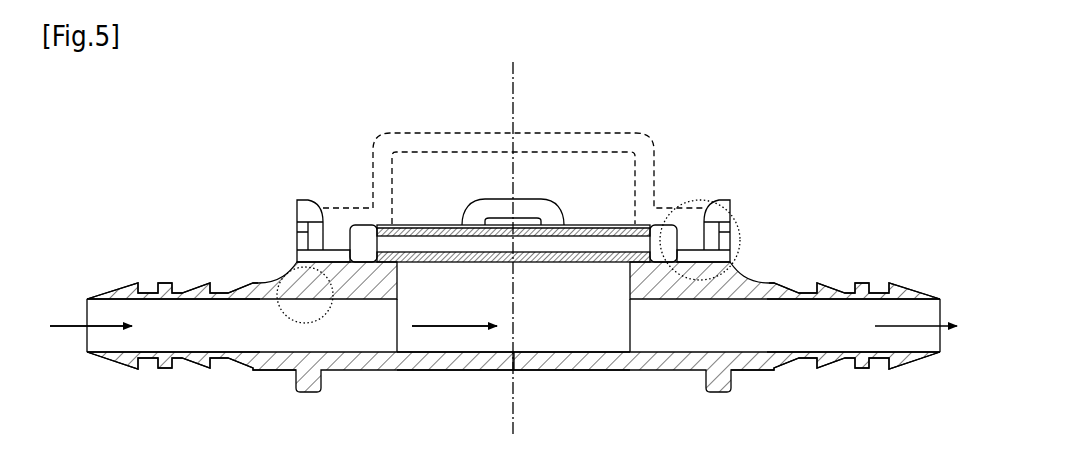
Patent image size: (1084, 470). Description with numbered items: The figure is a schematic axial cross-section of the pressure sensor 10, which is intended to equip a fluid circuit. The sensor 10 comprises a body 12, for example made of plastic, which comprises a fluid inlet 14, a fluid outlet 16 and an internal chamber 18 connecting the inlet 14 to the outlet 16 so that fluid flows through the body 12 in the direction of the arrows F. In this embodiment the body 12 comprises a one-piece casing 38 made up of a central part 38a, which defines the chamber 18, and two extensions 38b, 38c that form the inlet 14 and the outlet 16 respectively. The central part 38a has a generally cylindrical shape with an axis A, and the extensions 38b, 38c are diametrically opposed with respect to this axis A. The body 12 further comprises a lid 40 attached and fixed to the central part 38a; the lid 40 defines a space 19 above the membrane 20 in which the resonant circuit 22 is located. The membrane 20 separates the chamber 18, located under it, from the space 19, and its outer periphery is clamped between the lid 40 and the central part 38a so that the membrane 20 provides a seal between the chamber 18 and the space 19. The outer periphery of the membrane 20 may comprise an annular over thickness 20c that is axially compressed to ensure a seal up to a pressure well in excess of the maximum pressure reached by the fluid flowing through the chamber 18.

The pressure sensor 10 is at (807, 126).
The body 12 is at (412, 374).
The fluid inlet 14 is at (191, 361).
The fluid outlet 16 is at (835, 361).
The internal chamber 18 is at (595, 296).
The space 19 is at (459, 186).
The membrane 20 is at (672, 226).
The annular over thickness 20c is at (310, 267).
The resonant circuit 22 is at (526, 197).
The one-piece casing 38 is at (513, 398).
The central part 38a is at (474, 366).
The extension 38b is at (168, 371).
The extension 38c is at (862, 371).
The lid 40 is at (658, 132).
The axis A is at (513, 90).
The arrows F is at (72, 328).